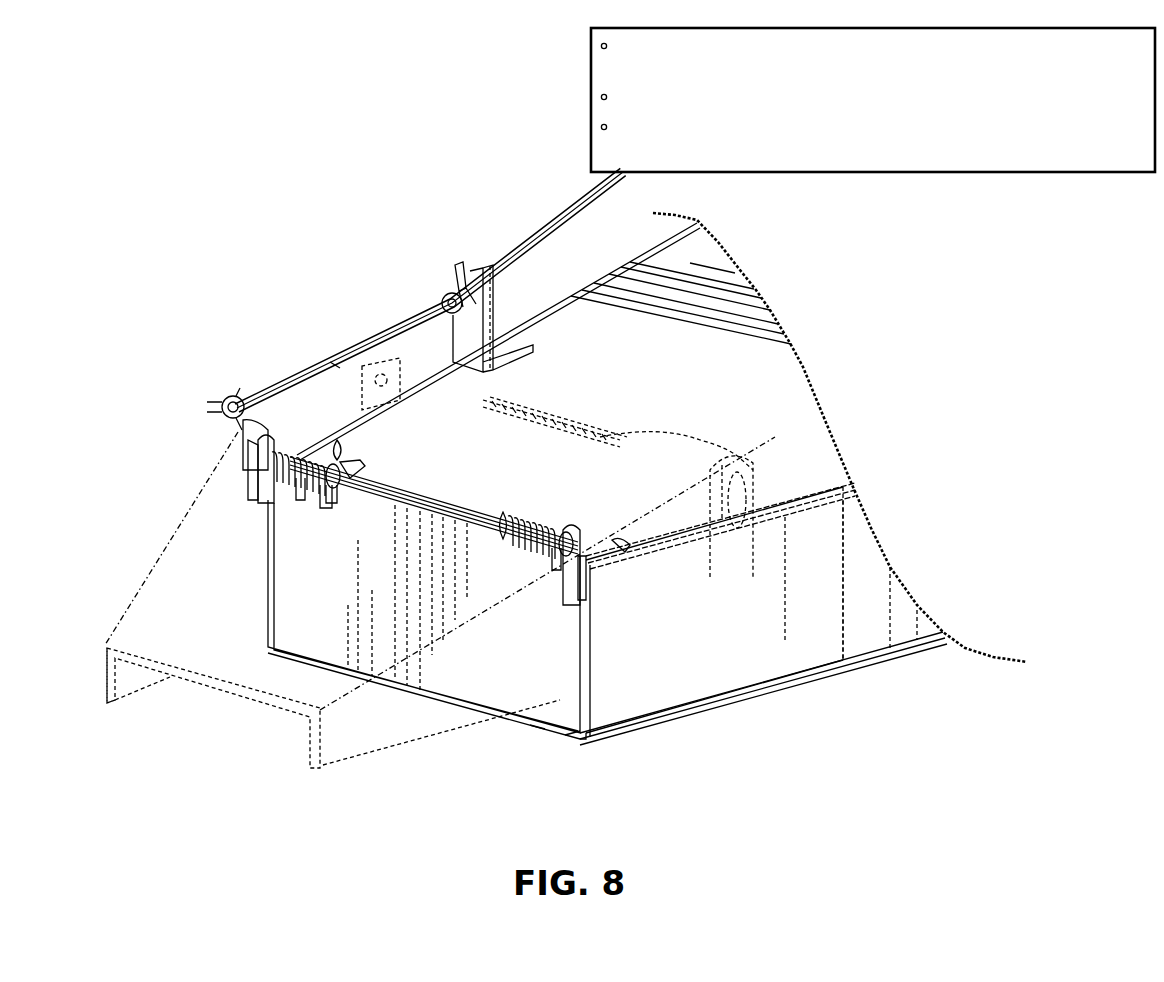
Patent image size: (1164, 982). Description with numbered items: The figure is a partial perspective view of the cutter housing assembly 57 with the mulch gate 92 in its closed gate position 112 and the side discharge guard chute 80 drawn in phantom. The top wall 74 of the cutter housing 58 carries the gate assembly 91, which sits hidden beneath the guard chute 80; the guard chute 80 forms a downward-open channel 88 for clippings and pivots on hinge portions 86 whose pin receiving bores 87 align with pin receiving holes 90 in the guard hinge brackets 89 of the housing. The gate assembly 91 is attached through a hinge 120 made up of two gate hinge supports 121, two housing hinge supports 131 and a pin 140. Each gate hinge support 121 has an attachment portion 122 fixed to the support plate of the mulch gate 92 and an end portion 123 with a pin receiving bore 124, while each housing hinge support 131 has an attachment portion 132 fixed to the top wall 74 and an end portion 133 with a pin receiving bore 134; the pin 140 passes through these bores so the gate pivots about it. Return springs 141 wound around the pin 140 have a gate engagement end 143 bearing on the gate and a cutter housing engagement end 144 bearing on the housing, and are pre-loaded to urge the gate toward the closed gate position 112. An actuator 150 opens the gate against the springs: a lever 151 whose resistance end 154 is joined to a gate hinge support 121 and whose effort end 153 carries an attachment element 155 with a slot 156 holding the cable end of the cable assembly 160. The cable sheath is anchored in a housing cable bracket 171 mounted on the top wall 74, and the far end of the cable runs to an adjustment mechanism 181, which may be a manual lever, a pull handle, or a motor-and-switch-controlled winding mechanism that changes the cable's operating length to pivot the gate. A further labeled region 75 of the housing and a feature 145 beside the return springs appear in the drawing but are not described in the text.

The adjustment mechanism 181 is at (591, 64).
The top wall 74 is at (790, 388).
The hinge portions 86 is at (697, 445).
The pin receiving bore 87 is at (522, 396).
The guard hinge brackets 89 is at (383, 323).
The housing cable bracket 171 is at (508, 312).
The actuator 150 is at (460, 252).
The cable assembly 160 is at (330, 362).
The pin receiving holes 90 is at (362, 372).
The cutter housing engagement end 144 is at (315, 440).
The cutter housing assembly 57 is at (222, 400).
The attachment element 155 is at (215, 405).
The lever 151 is at (225, 414).
The effort end 153 is at (237, 395).
The slot 156 is at (243, 440).
The resistance end 154 is at (243, 460).
The pin receiving bore 124 is at (243, 440).
The gate hinge supports 121 is at (248, 486).
The housing hinge supports 131 is at (333, 503).
The mulch gate 92 is at (590, 732).
The attachment portion 122 is at (590, 617).
The end portion 123 is at (607, 550).
The cutter housing 58 is at (905, 660).
The support post 75 is at (855, 637).
The hinge 120 is at (428, 488).
The pin receiving bore 134 is at (345, 462).
The attachment portion 132 is at (508, 520).
The end portion 133 is at (540, 505).
The return springs 141 is at (562, 528).
The retainer 145 is at (331, 494).
The pin 140 is at (340, 500).
The gate engagement end 143 is at (320, 490).
The side discharge guard chute 80 is at (357, 760).
The channel 88 is at (197, 698).
The closed gate position 112 is at (562, 750).
The gate assembly 91 is at (540, 745).